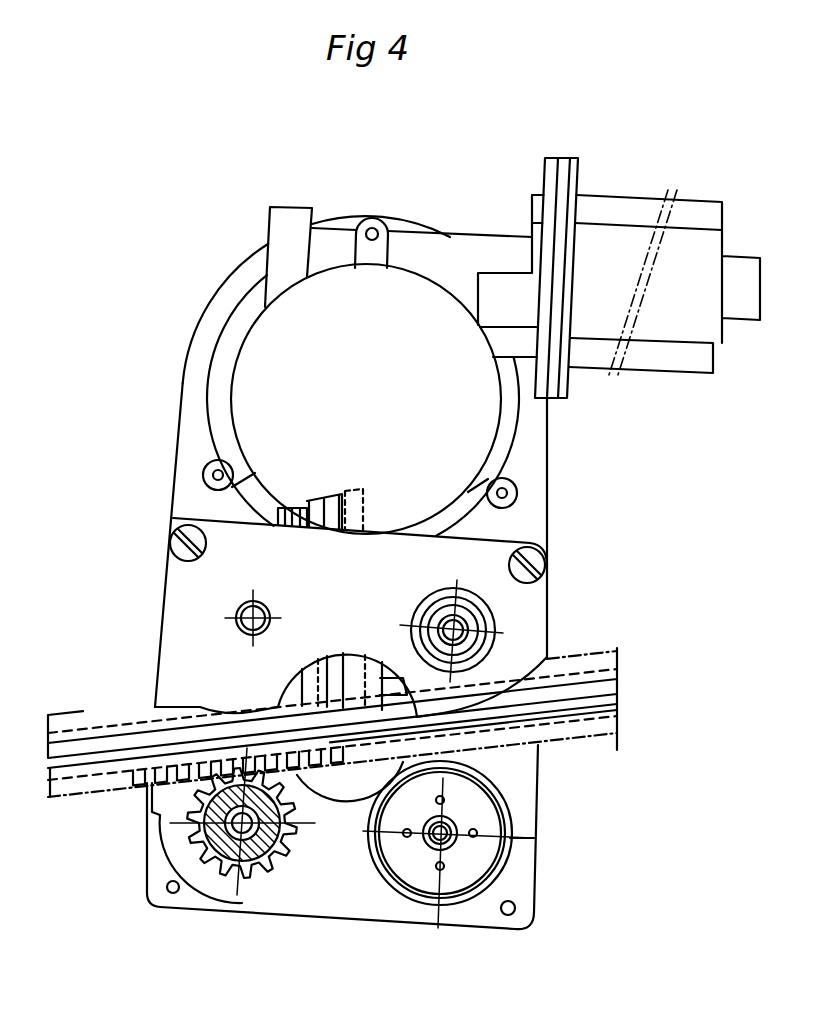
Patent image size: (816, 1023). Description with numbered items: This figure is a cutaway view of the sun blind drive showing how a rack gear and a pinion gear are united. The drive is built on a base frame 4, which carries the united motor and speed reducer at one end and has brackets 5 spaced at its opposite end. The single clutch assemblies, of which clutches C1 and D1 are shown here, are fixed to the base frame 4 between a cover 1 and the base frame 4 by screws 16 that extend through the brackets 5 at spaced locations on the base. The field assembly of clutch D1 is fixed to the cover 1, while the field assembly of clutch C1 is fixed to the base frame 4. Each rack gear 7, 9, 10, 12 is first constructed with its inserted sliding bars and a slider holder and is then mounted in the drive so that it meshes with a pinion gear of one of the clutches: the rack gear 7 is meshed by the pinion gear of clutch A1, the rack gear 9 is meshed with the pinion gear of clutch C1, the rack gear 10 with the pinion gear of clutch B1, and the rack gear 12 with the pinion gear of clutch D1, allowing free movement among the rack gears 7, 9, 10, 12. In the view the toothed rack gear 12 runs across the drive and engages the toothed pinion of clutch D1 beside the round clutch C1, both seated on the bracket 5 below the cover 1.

The cover 1 is at (545, 610).
The base frame 4 is at (548, 513).
The bracket 5 is at (183, 903).
The rack gear 7 is at (290, 506).
The rack gear 9 is at (365, 509).
The rack gear 10 is at (618, 660).
The rack gear 12 is at (563, 742).
The screws 16 is at (176, 540).
The single clutch assembly C1 is at (407, 888).
The single clutch assembly D1 is at (270, 884).